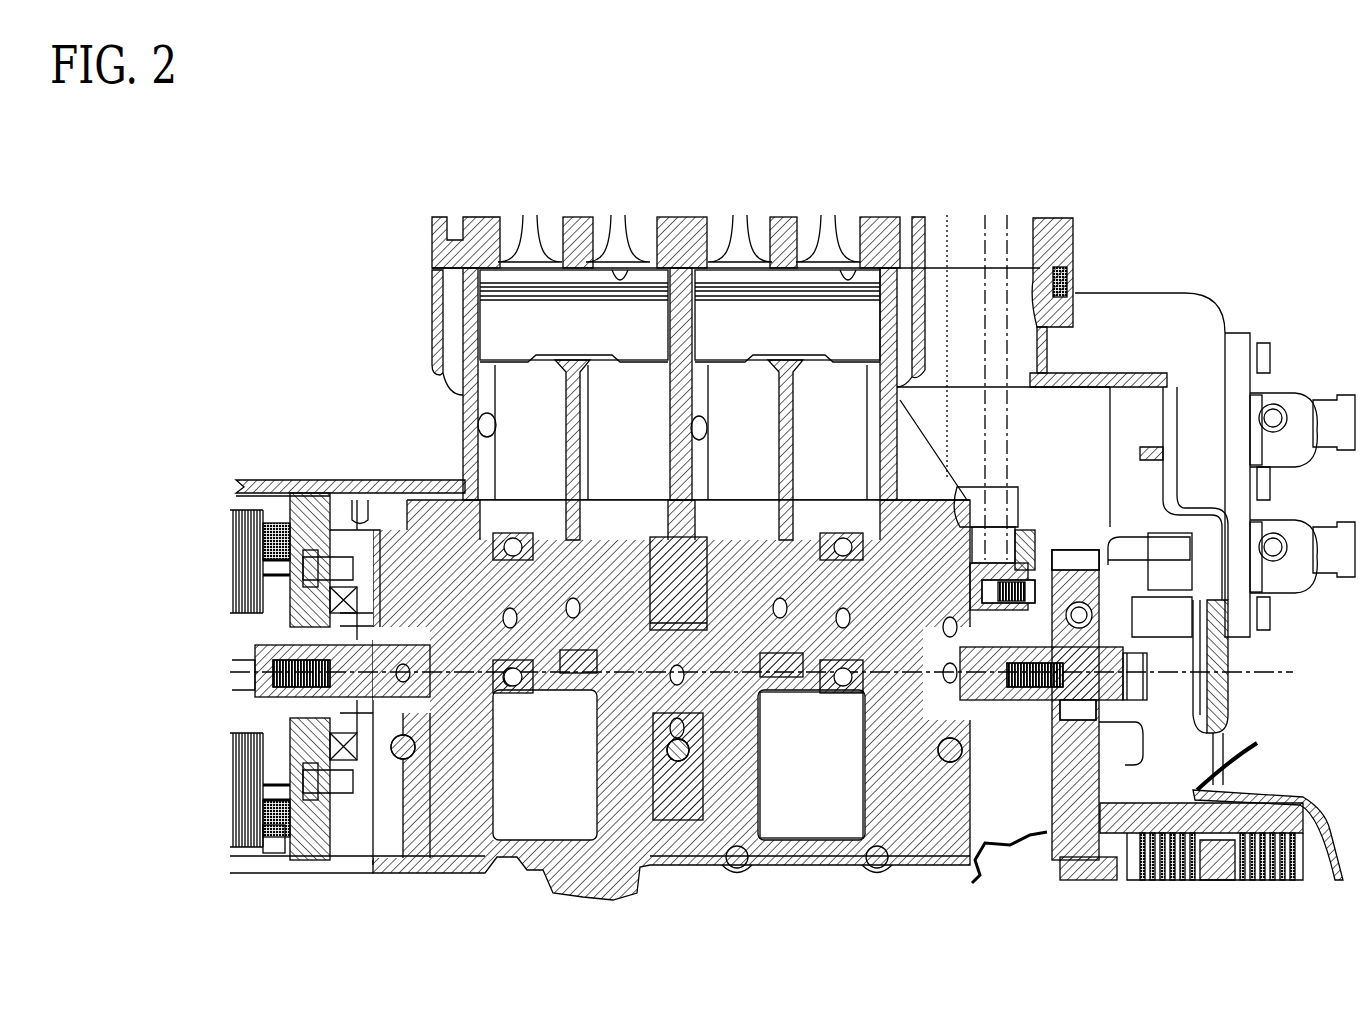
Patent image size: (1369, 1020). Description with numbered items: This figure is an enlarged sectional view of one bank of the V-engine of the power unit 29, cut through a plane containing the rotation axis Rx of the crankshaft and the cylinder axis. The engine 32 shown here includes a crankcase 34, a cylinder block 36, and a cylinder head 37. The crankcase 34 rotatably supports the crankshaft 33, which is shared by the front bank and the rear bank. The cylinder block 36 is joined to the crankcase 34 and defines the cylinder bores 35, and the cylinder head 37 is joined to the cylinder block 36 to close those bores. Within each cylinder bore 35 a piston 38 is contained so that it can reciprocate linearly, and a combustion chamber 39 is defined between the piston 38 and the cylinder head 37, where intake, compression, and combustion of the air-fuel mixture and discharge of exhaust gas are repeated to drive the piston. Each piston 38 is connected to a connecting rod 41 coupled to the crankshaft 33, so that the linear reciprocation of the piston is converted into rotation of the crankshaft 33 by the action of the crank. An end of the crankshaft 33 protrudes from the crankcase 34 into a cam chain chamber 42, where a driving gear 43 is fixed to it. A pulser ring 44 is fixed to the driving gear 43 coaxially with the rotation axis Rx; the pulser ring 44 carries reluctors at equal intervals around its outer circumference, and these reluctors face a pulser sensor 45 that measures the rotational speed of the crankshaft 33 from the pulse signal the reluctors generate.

The power unit 29 is at (1125, 268).
The engine 32 is at (352, 478).
The crankshaft 33 is at (590, 630).
The crankcase 34 is at (382, 482).
The cylinder bore 35 is at (470, 433).
The cylinder block 36 is at (470, 395).
The cylinder head 37 is at (432, 252).
The piston 38 is at (545, 353).
The combustion chamber 39 is at (620, 278).
The connecting rod 41 is at (568, 470).
The cam chain chamber 42 is at (1030, 340).
The driving gear 43 is at (1072, 510).
The pulser ring 44 is at (1133, 757).
The pulser sensor 45 is at (1177, 513).
The rotation axis Rx is at (740, 682).